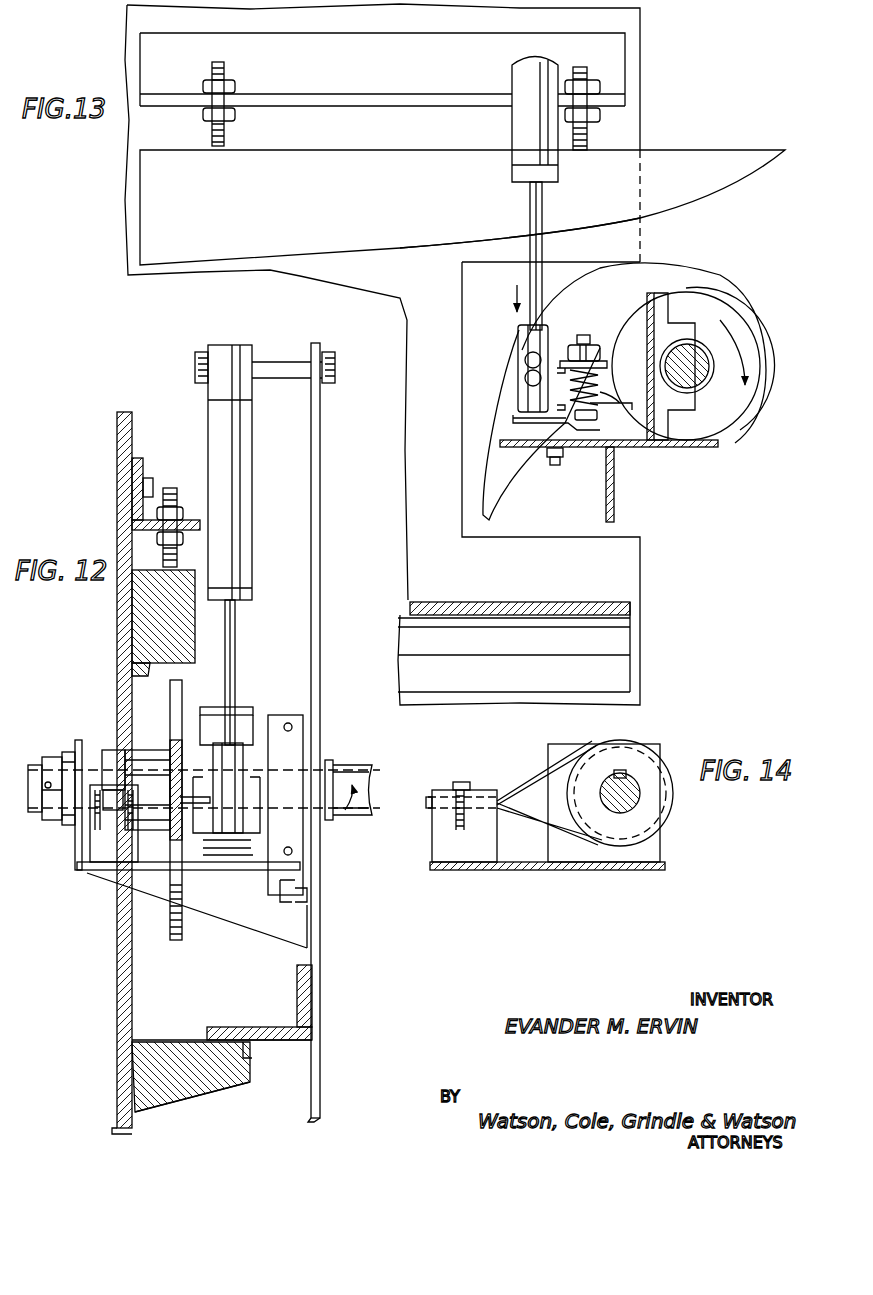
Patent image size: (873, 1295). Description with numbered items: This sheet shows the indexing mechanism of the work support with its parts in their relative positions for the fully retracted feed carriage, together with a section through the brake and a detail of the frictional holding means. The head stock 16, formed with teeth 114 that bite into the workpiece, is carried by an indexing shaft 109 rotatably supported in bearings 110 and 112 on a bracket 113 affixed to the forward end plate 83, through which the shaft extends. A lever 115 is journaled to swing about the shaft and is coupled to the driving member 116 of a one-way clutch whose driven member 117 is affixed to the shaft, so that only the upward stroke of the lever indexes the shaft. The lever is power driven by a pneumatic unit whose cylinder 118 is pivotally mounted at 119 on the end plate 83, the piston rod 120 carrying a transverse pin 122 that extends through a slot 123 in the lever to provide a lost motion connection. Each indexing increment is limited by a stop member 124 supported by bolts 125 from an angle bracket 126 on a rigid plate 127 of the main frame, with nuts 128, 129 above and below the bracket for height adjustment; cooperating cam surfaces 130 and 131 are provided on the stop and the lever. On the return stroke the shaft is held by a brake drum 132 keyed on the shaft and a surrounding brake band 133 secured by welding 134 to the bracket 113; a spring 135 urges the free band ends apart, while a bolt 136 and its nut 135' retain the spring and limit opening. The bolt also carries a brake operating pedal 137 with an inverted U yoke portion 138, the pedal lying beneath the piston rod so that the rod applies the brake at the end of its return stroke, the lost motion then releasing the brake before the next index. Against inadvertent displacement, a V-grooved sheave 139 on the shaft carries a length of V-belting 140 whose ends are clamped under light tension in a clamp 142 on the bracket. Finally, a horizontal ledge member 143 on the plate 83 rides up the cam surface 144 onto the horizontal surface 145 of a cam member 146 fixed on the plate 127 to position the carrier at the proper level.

In FIG. 12, the work support center or head stock 16 is at (348, 768).
In FIG. 12, the forward end plate 83 is at (318, 426).
In FIG. 13, the indexing shaft 109 is at (705, 372).
In FIG. 12, the indexing shaft 109 is at (288, 770).
In FIG. 14, the indexing shaft 109 is at (640, 805).
In FIG. 13, the bearing 110 is at (681, 410).
In FIG. 12, the bearing 110 is at (292, 715).
In FIG. 12, the bearing 112 is at (62, 822).
In FIG. 13, the supporting bracket 113 is at (640, 452).
In FIG. 12, the supporting bracket 113 is at (105, 875).
In FIG. 14, the supporting bracket 113 is at (518, 870).
In FIG. 12, the teeth 114 is at (352, 798).
In FIG. 13, the lever 115 is at (497, 478).
In FIG. 12, the lever 115 is at (175, 940).
In FIG. 12, the driving member 116 is at (162, 733).
In FIG. 12, the driven member 117 is at (140, 770).
In FIG. 13, the cylinder 118 is at (523, 128).
In FIG. 12, the cylinder 118 is at (230, 551).
In FIG. 12, the pivot 119 is at (280, 363).
In FIG. 13, the piston rod 120 is at (535, 220).
In FIG. 12, the piston rod 120 is at (235, 645).
In FIG. 13, the pin 122 is at (532, 378).
In FIG. 12, the pin 122 is at (195, 767).
In FIG. 13, the opening or slot 123 is at (520, 368).
In FIG. 12, the opening or slot 123 is at (165, 800).
In FIG. 13, the stop member 124 is at (693, 160).
In FIG. 12, the stop member 124 is at (140, 622).
In FIG. 13, the bolts 125 is at (212, 72).
In FIG. 12, the bolts 125 is at (170, 488).
In FIG. 13, the angle bracket 126 is at (384, 45).
In FIG. 12, the angle bracket 126 is at (150, 525).
In FIG. 13, the rigid plate 127 is at (640, 121).
In FIG. 12, the rigid plate 127 is at (117, 445).
In FIG. 13, the nut 128 is at (232, 90).
In FIG. 12, the nut 128 is at (157, 512).
In FIG. 13, the nut 129 is at (238, 118).
In FIG. 12, the nut 129 is at (160, 540).
In FIG. 13, the cam surface 130 is at (680, 220).
In FIG. 12, the cam surface 130 is at (112, 663).
In FIG. 13, the cam surface 131 is at (584, 275).
In FIG. 12, the cam surface 131 is at (178, 690).
In FIG. 13, the brake drum 132 is at (735, 320).
In FIG. 13, the brake band 133 is at (705, 292).
In FIG. 12, the brake band 133 is at (245, 710).
In FIG. 13, the welding 134 is at (720, 443).
In FIG. 13, the spring 135 is at (610, 417).
In FIG. 13, the nut 135' is at (579, 348).
In FIG. 13, the bolt 136 is at (584, 332).
In FIG. 13, the brake operating pedal 137 is at (522, 422).
In FIG. 12, the brake operating pedal 137 is at (225, 862).
In FIG. 13, the saddle or yoke portion 138 is at (594, 350).
In FIG. 14, the V-grooved sheave 139 is at (655, 770).
In FIG. 14, the V-belting 140 is at (540, 782).
In FIG. 14, the clamp 142 is at (445, 850).
In FIG. 12, the horizontal ledge member 143 is at (260, 1030).
In FIG. 12, the cam surface 144 is at (250, 1055).
In FIG. 12, the horizontal surface 145 is at (172, 1042).
In FIG. 12, the cam member 146 is at (195, 1092).